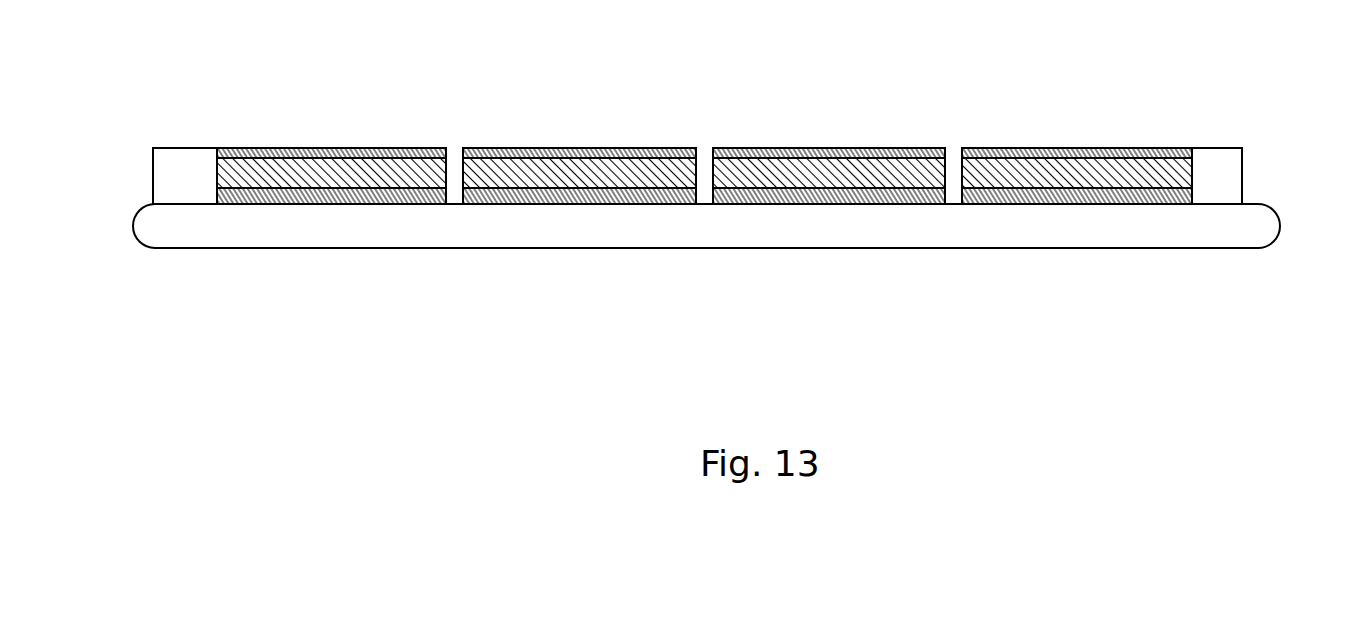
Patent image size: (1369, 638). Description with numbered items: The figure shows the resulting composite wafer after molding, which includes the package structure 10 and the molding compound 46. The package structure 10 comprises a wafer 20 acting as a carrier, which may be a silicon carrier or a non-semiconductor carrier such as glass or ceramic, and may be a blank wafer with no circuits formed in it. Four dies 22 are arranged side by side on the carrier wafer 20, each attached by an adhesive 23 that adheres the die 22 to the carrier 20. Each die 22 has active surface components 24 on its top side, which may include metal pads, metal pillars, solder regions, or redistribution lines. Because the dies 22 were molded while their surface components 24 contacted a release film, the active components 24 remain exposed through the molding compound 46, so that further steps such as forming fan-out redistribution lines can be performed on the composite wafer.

The package structure 10 is at (123, 147).
The wafer 20 is at (753, 234).
The dies 22 is at (446, 140).
The adhesives 23 is at (515, 204).
The active surface components 24 is at (513, 152).
The molding compound 46 is at (177, 160).